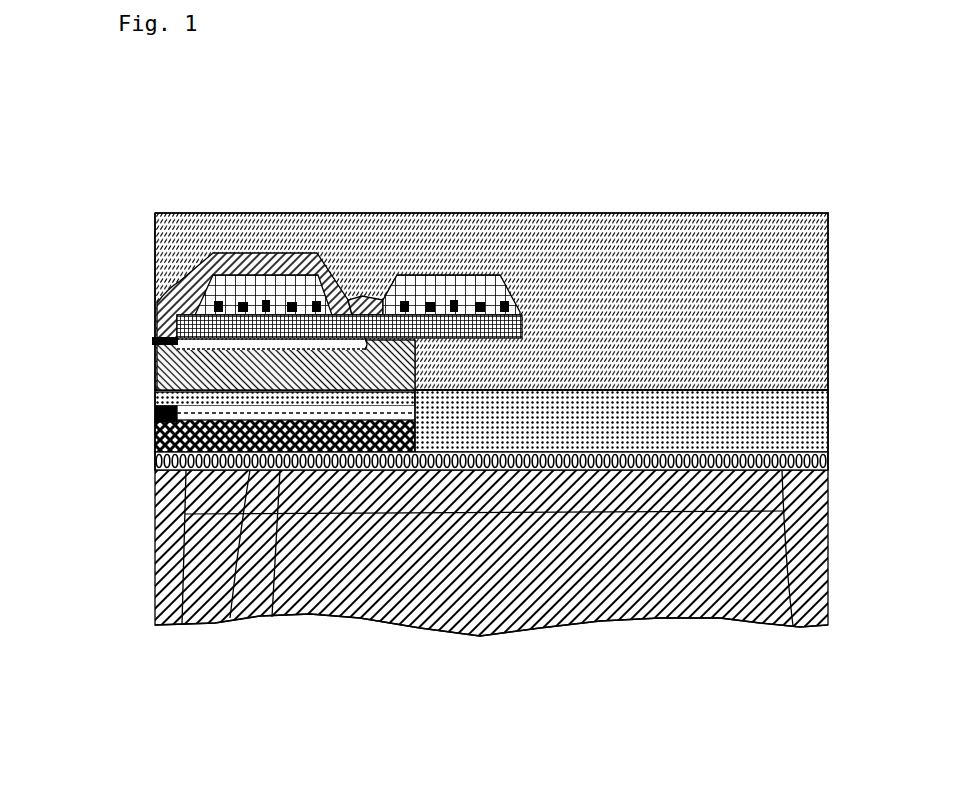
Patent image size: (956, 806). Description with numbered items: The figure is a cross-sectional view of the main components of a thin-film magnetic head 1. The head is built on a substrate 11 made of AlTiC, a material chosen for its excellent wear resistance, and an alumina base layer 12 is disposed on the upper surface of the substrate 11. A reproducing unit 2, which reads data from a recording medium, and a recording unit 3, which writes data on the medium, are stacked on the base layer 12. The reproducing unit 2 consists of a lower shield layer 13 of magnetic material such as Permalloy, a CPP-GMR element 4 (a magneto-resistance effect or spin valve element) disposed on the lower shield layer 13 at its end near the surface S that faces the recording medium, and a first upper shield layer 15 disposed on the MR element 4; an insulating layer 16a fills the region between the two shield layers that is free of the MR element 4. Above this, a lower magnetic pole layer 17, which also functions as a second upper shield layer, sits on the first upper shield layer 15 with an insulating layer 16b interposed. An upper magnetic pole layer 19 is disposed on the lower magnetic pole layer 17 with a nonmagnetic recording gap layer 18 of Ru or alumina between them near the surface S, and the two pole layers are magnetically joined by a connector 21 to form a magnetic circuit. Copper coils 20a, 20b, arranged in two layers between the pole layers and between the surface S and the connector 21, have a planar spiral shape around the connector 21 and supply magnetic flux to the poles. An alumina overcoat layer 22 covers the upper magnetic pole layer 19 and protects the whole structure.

The thin-film magnetic head 1 is at (630, 137).
The reproducing unit 2 is at (120, 430).
The recording unit 3 is at (129, 307).
The CPP-GMR element 4 is at (153, 418).
The surface to face a recording medium S is at (153, 548).
The substrate 11 is at (743, 622).
The base layer 12 is at (793, 626).
The lower shield layer 13 is at (182, 625).
The first upper shield layer 15 is at (230, 618).
The insulating layer 16a is at (272, 617).
The insulating layer 16b is at (295, 275).
The lower magnetic pole layer 17 is at (321, 290).
The recording gap layer 18 is at (153, 343).
The upper magnetic pole layer 19 is at (225, 250).
The coil 20a is at (427, 272).
The coil 20b is at (522, 288).
The connector 21 is at (363, 300).
The overcoat layer 22 is at (610, 230).